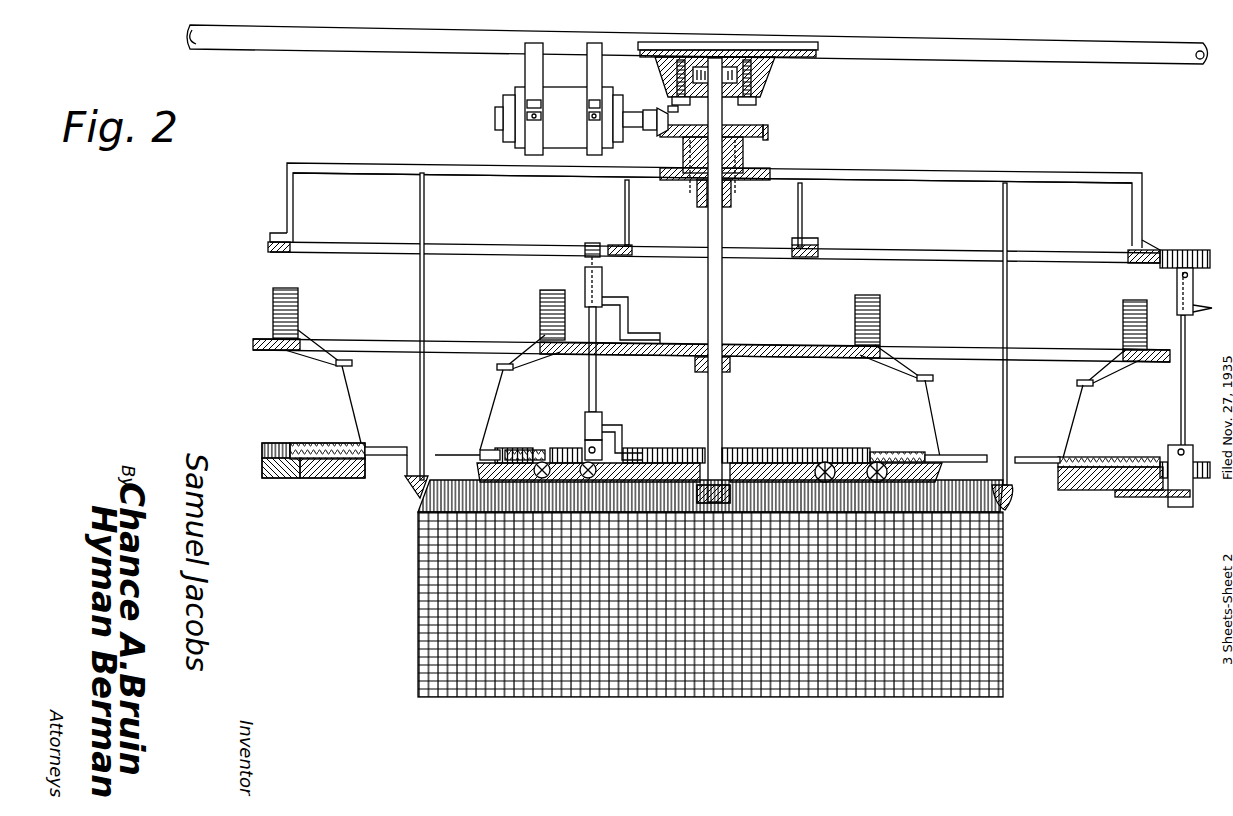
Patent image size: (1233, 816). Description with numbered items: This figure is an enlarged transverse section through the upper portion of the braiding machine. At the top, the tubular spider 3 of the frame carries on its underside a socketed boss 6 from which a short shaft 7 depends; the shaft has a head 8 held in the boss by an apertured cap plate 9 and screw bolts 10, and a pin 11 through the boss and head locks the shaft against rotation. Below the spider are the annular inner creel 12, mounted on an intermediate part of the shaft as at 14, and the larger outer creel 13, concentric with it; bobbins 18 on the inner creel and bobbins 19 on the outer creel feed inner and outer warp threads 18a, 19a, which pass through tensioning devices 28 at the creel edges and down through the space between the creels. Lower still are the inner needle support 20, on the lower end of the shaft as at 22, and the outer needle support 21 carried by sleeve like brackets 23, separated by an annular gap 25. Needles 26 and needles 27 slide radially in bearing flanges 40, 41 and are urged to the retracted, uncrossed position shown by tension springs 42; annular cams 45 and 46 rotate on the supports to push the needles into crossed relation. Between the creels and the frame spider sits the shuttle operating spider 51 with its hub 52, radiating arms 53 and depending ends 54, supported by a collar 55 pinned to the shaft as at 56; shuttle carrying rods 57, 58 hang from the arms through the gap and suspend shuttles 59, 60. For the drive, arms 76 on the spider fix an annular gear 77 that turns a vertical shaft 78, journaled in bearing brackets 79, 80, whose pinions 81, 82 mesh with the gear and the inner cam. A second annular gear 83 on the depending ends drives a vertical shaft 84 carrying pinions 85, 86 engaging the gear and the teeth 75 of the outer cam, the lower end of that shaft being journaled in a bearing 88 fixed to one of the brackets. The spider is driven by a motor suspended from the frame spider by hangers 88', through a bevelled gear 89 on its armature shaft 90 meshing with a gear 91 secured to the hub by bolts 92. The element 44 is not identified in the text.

The spider 3 is at (995, 40).
The socketed boss 6 is at (775, 75).
The short shaft 7 is at (723, 299).
The head 8 is at (740, 45).
The apertured cap plate 9 is at (757, 101).
The screw bolts 10 is at (767, 112).
The pin 11 is at (716, 67).
The inner creel 12 is at (810, 343).
The outer creel 13 is at (265, 352).
The intermediate part of the shaft 14 is at (727, 345).
The warp feeding bobbins 18 is at (552, 290).
The inner warp threads 18a is at (498, 396).
The warp feeding bobbins 19 is at (299, 307).
The outer warp threads 19a is at (353, 408).
The inner needle support 20 is at (800, 462).
The outer needle support 21 is at (355, 479).
The mounting of inner needle support 22 is at (745, 450).
The sleeve like brackets 23 is at (1180, 510).
The annular gap 25 is at (430, 450).
The needles 26 is at (455, 452).
The needles 27 is at (380, 447).
The tensioning devices 28 is at (320, 364).
The annular bearing flange 40 is at (495, 450).
The annular bearing flange 41 is at (342, 440).
The tension springs 42 is at (318, 443).
The housing 44 is at (1110, 478).
The inner needle operating cam 45 is at (850, 460).
The outer needle operating cam 46 is at (279, 443).
The shuttle operating spider 51 is at (883, 160).
The hub 52 is at (762, 170).
The arms 53 is at (953, 172).
The depending ends 54 is at (300, 228).
The collar 55 is at (728, 205).
The pin 56 is at (697, 205).
The shuttle carrying rod 57 is at (425, 228).
The shuttle carrying rod 58 is at (1008, 218).
The shuttle 59 is at (412, 493).
The shuttle 60 is at (1012, 500).
The teeth 75 is at (262, 450).
The arms 76 is at (803, 216).
The annular gear 77 is at (800, 262).
The vertical shaft 78 is at (597, 400).
The bearing bracket 79 is at (628, 300).
The bearing bracket 80 is at (605, 430).
The gear pinion 81 is at (592, 243).
The gear pinion 82 is at (583, 440).
The second annular gear 83 is at (1082, 250).
The vertical shaft 84 is at (1181, 395).
The gear pinion 85 is at (1190, 250).
The gear pinion 86 is at (1195, 460).
The hangers 88' is at (563, 81).
The bearing 88 is at (1152, 510).
The bevelled gear 89 is at (668, 110).
The armature shaft 90 is at (650, 132).
The gear 91 is at (665, 138).
The bolts 92 is at (690, 190).